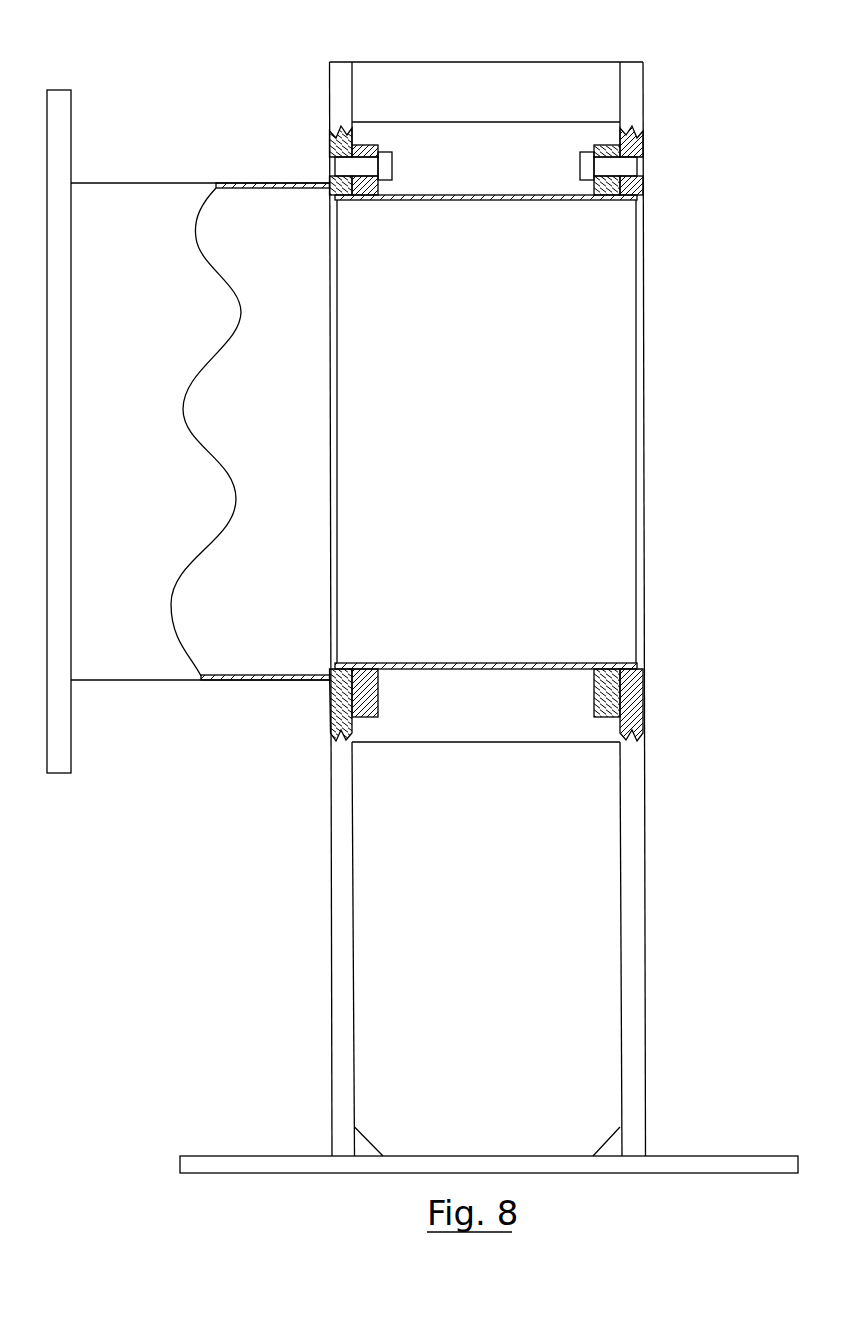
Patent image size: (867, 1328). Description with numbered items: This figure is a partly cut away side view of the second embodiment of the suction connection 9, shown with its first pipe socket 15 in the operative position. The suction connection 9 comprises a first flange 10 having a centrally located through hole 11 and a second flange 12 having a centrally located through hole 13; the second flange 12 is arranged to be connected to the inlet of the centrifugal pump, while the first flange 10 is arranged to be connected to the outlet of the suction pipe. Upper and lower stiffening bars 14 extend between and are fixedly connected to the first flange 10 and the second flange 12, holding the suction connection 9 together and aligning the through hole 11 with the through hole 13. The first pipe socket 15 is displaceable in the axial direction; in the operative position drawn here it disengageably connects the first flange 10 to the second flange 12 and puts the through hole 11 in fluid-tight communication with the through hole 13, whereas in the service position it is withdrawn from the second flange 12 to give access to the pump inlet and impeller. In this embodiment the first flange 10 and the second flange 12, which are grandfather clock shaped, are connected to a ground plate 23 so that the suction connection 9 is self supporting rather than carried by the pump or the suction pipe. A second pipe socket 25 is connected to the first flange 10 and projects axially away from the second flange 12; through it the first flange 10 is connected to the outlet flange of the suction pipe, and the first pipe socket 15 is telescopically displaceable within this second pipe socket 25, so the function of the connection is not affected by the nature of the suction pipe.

The suction connection 9 is at (653, 333).
The first flange 10 is at (340, 72).
The through hole 11 is at (333, 230).
The second flange 12 is at (632, 70).
The through hole 13 is at (640, 229).
The stiffening bar 14 is at (497, 78).
The first pipe socket 15 is at (608, 389).
The ground plate 23 is at (278, 1170).
The second pipe socket 25 is at (133, 215).